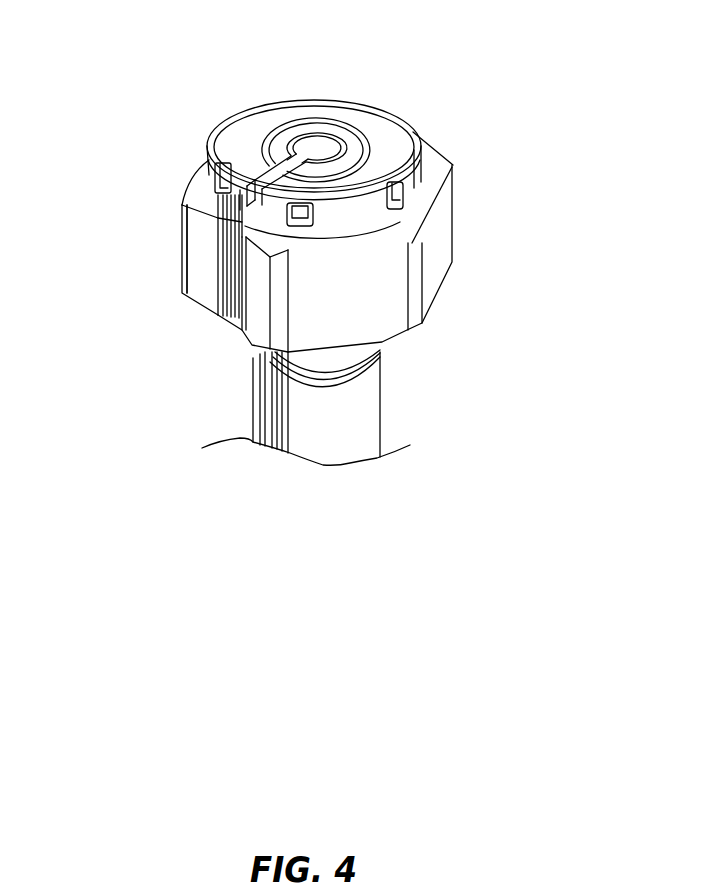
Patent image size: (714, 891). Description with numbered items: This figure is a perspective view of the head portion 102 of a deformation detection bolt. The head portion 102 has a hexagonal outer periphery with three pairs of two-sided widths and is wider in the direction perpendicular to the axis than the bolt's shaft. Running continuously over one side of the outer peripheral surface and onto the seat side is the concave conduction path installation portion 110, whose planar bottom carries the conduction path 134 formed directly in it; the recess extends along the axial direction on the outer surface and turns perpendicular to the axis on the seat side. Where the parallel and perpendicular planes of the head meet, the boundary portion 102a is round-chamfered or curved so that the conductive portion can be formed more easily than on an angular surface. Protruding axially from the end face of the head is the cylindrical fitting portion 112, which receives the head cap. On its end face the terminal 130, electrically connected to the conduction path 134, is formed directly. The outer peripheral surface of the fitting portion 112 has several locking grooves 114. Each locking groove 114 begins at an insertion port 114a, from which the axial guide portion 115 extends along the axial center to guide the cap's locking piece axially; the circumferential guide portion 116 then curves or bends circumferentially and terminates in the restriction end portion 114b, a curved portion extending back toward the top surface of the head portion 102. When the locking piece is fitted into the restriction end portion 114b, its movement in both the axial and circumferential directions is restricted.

The head portion 102 is at (393, 325).
The boundary portion 102a is at (183, 205).
The conduction path installation portion 110 is at (214, 262).
The fitting portion 112 is at (393, 153).
The locking groove 114 is at (232, 150).
The insertion port 114a is at (312, 203).
The restriction end portion 114b is at (256, 182).
The axial guide portion 115 is at (297, 220).
The circumferential guide portion 116 is at (297, 257).
The terminal 130 is at (279, 186).
The conduction path 134 is at (206, 300).